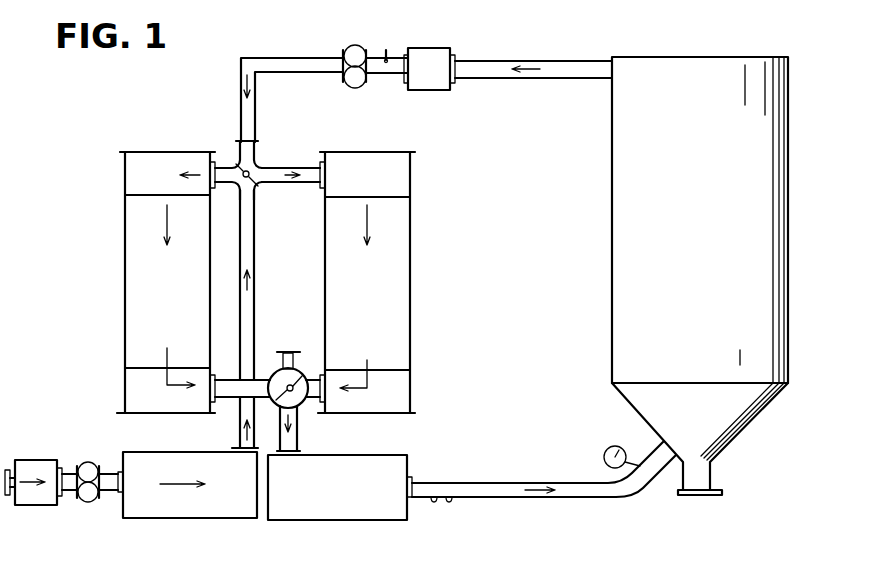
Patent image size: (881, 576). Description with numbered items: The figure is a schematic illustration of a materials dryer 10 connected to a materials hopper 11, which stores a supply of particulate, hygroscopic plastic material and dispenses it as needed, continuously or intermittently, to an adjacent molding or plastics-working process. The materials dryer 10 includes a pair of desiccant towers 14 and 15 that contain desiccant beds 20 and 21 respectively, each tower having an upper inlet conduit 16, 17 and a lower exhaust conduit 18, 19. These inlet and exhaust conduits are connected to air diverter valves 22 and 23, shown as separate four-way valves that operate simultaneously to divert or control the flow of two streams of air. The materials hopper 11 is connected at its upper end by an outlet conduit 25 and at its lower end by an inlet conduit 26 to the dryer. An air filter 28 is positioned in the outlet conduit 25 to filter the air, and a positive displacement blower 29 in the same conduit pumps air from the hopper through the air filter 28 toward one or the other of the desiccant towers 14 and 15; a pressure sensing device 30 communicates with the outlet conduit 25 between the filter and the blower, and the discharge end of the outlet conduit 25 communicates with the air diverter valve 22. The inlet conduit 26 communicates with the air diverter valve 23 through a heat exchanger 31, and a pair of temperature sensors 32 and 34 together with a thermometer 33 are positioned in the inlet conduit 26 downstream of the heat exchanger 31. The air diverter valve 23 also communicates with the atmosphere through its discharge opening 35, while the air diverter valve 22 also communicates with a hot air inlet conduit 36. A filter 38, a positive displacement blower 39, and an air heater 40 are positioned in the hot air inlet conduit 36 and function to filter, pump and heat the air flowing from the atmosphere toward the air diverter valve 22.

The materials dryer 10 is at (111, 108).
The materials hopper 11 is at (798, 128).
The desiccant tower 14 is at (412, 216).
The desiccant tower 15 is at (123, 196).
The upper inlet conduit 16 is at (309, 165).
The upper inlet conduit 17 is at (226, 157).
The lower exhaust conduit 18 is at (313, 378).
The lower exhaust conduit 19 is at (226, 378).
The desiccant bed 20 is at (388, 318).
The desiccant bed 21 is at (140, 292).
The air diverter valve 22 is at (265, 158).
The air diverter valve 23 is at (266, 358).
The outlet conduit 25 is at (265, 58).
The inlet conduit 26 is at (298, 440).
The air filter 28 is at (430, 53).
The positive displacement blower 29 is at (346, 50).
The pressure sensing device 30 is at (386, 50).
The heat exchanger 31 is at (318, 522).
The temperature sensor 32 is at (434, 502).
The thermometer 33 is at (602, 459).
The temperature sensor 34 is at (449, 502).
The discharge opening 35 is at (290, 347).
The hot air inlet conduit 36 is at (256, 236).
The filter 38 is at (37, 460).
The positive displacement blower 39 is at (88, 464).
The air heater 40 is at (162, 520).